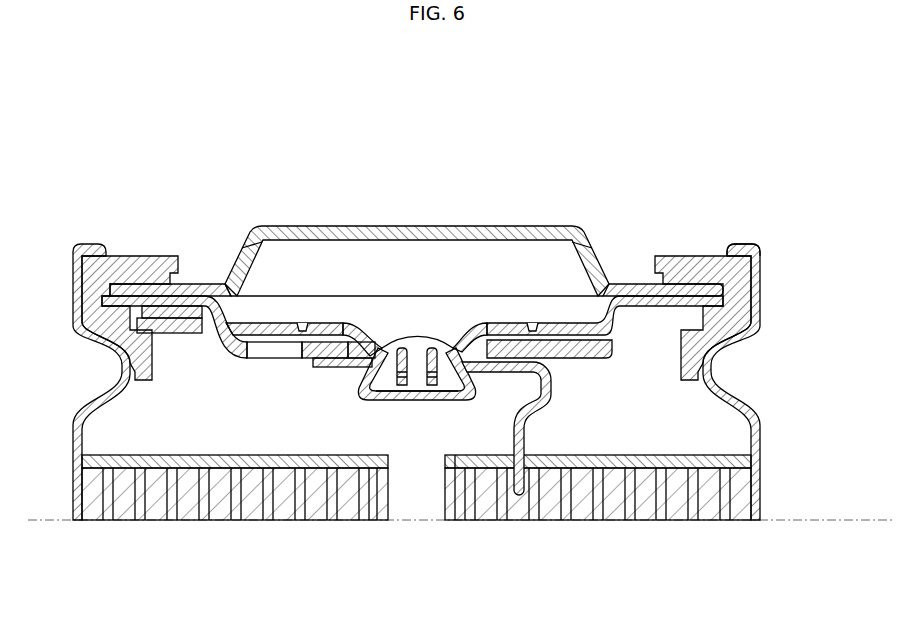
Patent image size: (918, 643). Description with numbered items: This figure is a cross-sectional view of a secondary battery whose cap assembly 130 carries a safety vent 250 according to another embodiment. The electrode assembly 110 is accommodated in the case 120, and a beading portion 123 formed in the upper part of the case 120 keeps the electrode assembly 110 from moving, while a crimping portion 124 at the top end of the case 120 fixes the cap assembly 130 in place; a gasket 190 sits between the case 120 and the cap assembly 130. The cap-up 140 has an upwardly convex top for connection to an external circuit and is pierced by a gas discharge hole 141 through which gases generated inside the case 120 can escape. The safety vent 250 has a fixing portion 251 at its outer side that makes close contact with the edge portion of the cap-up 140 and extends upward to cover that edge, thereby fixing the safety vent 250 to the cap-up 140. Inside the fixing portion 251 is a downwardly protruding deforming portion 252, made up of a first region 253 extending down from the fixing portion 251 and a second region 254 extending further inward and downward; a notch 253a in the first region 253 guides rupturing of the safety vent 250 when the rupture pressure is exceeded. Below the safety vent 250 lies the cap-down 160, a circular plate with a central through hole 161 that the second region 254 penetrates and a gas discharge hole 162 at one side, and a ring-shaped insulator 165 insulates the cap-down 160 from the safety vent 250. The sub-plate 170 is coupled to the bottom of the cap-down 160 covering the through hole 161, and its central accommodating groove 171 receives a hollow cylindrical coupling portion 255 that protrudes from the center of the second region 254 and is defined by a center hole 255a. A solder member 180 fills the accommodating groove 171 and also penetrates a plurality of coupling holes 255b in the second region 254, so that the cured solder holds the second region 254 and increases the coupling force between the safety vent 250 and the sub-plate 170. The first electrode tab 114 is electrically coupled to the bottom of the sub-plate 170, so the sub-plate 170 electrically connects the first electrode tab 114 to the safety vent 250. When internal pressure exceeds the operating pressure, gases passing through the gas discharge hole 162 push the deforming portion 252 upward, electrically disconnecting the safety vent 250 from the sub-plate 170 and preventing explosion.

The electrode assembly 110 is at (754, 498).
The first electrode tab 114 is at (527, 412).
The case 120 is at (762, 461).
The beading portion 123 is at (717, 365).
The crimping portion 124 is at (761, 268).
The cap assembly 130 is at (257, 190).
The cap-up 140 is at (354, 285).
The gas discharge hole 141 is at (238, 288).
The cap-down 160 is at (187, 290).
The through hole 161 is at (488, 395).
The gas discharge hole 162 is at (253, 360).
The insulator 165 is at (150, 292).
The sub-plate 170 is at (317, 367).
The accommodating groove 171 is at (413, 398).
The solder member 180 is at (390, 400).
The gasket 190 is at (733, 317).
The safety vent 250 is at (547, 110).
The fixing portion 251 is at (648, 285).
The deforming portion 252 is at (553, 149).
The first region 253 is at (563, 322).
The notch 253a is at (301, 322).
The second region 254 is at (470, 325).
The coupling portion 255 is at (435, 343).
The center hole 255a is at (418, 337).
The coupling holes 255b is at (454, 340).